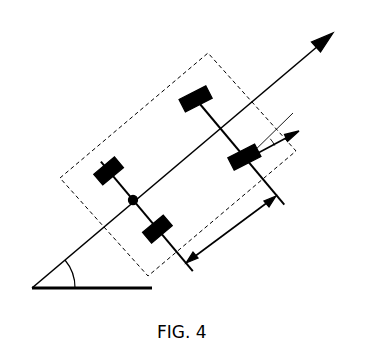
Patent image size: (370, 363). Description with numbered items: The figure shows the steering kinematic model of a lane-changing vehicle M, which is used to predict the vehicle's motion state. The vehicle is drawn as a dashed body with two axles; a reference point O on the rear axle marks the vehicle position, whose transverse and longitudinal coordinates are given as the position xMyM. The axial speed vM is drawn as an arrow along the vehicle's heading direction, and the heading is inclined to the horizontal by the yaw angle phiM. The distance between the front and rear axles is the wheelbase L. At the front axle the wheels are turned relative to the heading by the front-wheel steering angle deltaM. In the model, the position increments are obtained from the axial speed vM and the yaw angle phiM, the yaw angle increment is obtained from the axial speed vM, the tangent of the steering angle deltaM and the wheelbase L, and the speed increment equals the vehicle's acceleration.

The axial speed vM is at (182, 160).
The origin / rear axle center O is at (122, 193).
The transverse and longitudinal position xMyM is at (188, 204).
The front-wheel steering angle deltaM is at (280, 136).
The wheelbase L is at (231, 229).
The yaw angle phiM is at (84, 272).